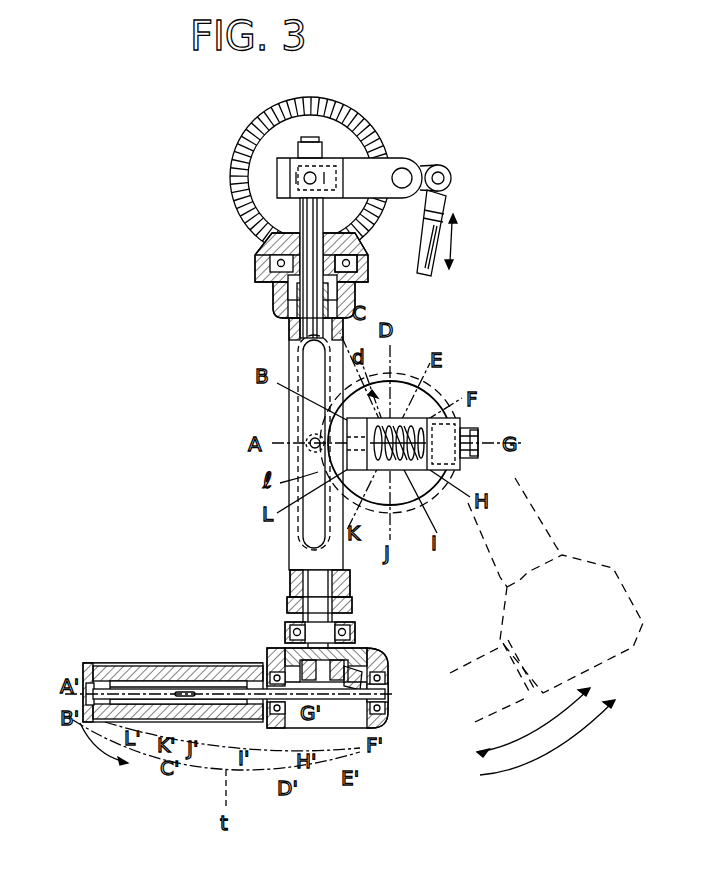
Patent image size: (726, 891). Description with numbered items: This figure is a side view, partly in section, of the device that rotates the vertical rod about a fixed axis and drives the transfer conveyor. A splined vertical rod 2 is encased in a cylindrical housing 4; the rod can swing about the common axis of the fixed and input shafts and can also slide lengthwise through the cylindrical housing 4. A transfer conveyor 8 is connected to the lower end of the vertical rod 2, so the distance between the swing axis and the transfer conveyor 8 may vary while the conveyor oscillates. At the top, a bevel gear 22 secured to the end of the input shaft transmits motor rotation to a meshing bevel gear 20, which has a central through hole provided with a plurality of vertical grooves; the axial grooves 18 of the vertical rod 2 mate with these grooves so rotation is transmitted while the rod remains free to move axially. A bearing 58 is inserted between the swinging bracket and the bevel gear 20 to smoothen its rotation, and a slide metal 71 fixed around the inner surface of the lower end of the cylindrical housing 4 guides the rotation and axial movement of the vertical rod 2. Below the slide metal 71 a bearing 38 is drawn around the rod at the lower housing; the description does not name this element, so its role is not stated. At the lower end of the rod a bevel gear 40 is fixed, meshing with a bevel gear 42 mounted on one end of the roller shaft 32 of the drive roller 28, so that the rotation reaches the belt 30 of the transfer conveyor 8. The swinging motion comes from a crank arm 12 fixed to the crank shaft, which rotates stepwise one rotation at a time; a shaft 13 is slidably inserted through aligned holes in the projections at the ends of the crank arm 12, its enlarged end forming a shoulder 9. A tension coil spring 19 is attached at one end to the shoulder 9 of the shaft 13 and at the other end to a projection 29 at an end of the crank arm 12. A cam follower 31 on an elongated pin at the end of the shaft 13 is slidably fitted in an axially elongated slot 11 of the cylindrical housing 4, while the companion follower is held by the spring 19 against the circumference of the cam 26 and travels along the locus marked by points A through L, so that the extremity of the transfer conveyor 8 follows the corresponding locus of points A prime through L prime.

The splined vertical rod 2 is at (307, 318).
The cylindrical housing 4 is at (277, 294).
The transfer conveyor 8 is at (205, 662).
The shoulder 9 is at (446, 418).
The axially elongated slot 11 is at (322, 557).
The crank arm 12 is at (466, 428).
The shaft 13 is at (478, 436).
The axial grooves 18 is at (310, 224).
The tension coil spring 19 is at (428, 412).
The bevel gear 20 is at (283, 245).
The bevel gear 22 is at (237, 180).
The cam 26 is at (397, 373).
The drive roller 28 is at (150, 681).
The projection 29 is at (410, 381).
The belt 30 is at (122, 663).
The cam follower 31 is at (308, 440).
The roller shaft 32 is at (186, 689).
The bearing 38 is at (290, 632).
The bevel gear 40 is at (356, 645).
The bevel gear 42 is at (370, 655).
The bearing 58 is at (350, 262).
The slide metal 71 is at (342, 584).